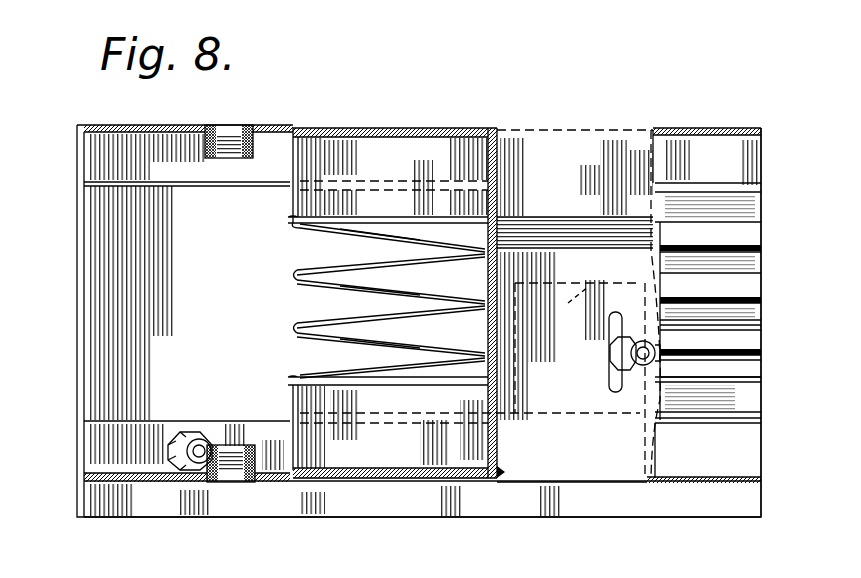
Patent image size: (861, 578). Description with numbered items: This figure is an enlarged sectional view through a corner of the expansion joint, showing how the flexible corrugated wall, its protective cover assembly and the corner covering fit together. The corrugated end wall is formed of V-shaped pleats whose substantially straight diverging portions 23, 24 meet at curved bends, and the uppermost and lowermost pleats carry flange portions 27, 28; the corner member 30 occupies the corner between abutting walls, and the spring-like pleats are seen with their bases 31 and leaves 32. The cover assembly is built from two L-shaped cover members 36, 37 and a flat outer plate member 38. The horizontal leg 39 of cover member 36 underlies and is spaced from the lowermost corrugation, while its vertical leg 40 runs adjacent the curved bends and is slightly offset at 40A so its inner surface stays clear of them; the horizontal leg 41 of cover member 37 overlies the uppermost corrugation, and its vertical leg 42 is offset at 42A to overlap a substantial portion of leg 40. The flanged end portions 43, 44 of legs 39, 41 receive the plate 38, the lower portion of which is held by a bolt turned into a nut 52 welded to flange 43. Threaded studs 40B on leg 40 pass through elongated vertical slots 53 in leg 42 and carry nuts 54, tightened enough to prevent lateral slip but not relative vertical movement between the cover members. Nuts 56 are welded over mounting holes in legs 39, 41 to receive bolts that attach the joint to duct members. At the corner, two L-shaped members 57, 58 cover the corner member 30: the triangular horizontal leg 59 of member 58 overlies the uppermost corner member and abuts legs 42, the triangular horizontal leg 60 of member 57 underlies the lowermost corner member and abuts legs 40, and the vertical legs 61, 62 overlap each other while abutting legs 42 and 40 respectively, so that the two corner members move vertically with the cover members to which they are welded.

The diverging portion 23 is at (748, 233).
The diverging portion 24 is at (748, 263).
The flange portion 27 is at (292, 200).
The flange portion 28 is at (292, 395).
The corner member 30 is at (300, 244).
The spring element base 31 is at (328, 236).
The spring element leaf 32 is at (353, 268).
The cover member 36 is at (645, 449).
The cover member 37 is at (641, 160).
The outer plate member 38 is at (95, 363).
The horizontal leg 39 is at (688, 480).
The vertical leg 40 is at (462, 470).
The offset 40A is at (492, 302).
The threaded stud 40B is at (650, 372).
The horizontal leg 41 is at (717, 130).
The vertical leg 42 is at (608, 130).
The offset 42A is at (553, 233).
The flanged end portion 43 is at (128, 420).
The flanged end portion 44 is at (96, 173).
The nut 52 is at (186, 430).
The slot 53 is at (612, 320).
The nut 54 is at (620, 355).
The nut 56 is at (205, 150).
The L-shaped member 57 is at (504, 476).
The L-shaped member 58 is at (502, 148).
The horizontal leg 59 is at (395, 128).
The horizontal leg 60 is at (398, 480).
The vertical leg 61 is at (500, 185).
The vertical leg 62 is at (500, 445).